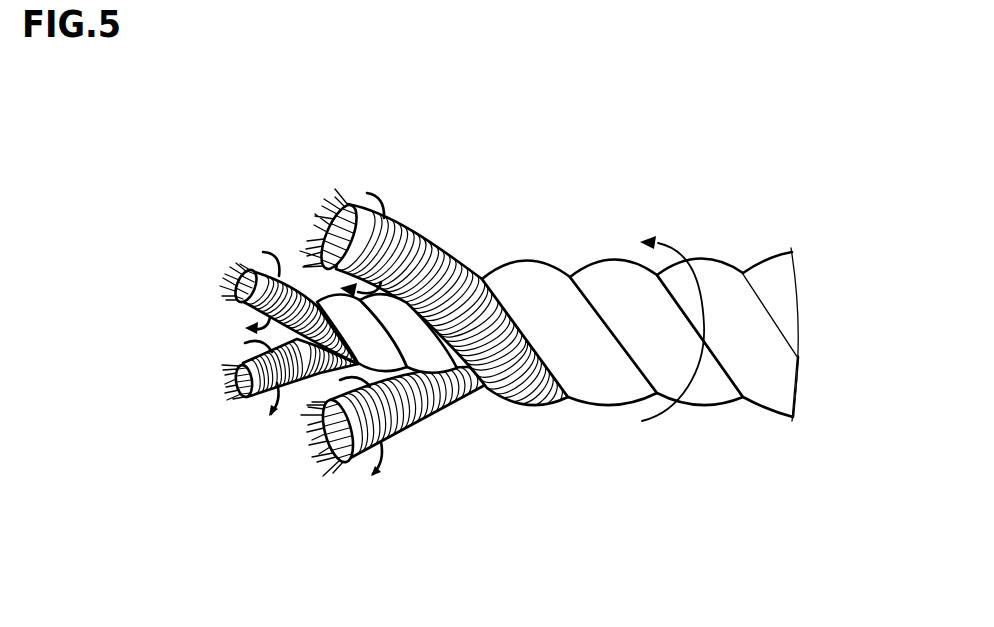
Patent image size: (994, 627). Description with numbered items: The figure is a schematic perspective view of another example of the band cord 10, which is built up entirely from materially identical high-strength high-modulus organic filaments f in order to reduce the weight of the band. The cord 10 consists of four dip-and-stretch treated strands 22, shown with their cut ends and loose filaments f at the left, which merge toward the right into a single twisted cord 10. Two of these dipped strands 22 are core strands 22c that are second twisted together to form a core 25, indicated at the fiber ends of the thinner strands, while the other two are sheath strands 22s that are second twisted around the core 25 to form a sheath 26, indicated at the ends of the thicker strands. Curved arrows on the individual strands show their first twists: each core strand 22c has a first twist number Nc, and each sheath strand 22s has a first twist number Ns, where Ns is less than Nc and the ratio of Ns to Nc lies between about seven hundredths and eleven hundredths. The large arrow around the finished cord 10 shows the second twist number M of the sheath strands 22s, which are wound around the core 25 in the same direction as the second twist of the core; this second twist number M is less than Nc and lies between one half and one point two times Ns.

The band cord 10 is at (557, 189).
The dipped strand 22 is at (225, 367).
The core strand 22c is at (225, 332).
The sheath strand 22s is at (460, 255).
The core 25 is at (227, 390).
The sheath 26 is at (340, 474).
The second twist number of the sheath strand M is at (681, 250).
The first twist number of the core strand Nc is at (275, 252).
The first twist number of the sheath strand Ns is at (380, 193).
The organic filaments f is at (318, 205).